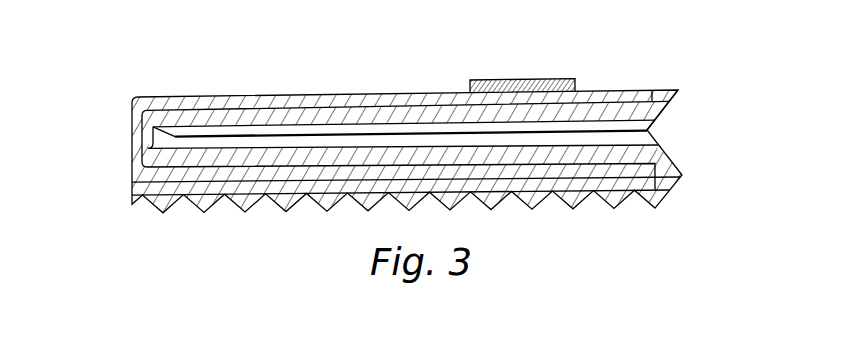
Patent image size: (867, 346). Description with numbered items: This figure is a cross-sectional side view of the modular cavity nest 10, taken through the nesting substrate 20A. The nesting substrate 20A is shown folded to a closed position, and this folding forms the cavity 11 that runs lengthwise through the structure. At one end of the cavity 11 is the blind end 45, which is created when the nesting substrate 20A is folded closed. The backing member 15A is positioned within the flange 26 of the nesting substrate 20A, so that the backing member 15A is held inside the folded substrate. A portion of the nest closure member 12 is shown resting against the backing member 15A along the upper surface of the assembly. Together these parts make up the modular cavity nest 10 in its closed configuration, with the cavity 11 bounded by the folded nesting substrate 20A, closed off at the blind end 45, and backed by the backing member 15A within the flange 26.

The modular cavity nest 10 is at (109, 40).
The cavity 11 is at (650, 132).
The nest closure member 12 is at (566, 76).
The backing member 15A is at (133, 122).
The nesting substrate 20A is at (240, 115).
The flange 26 is at (679, 91).
The blind end 45 is at (150, 156).